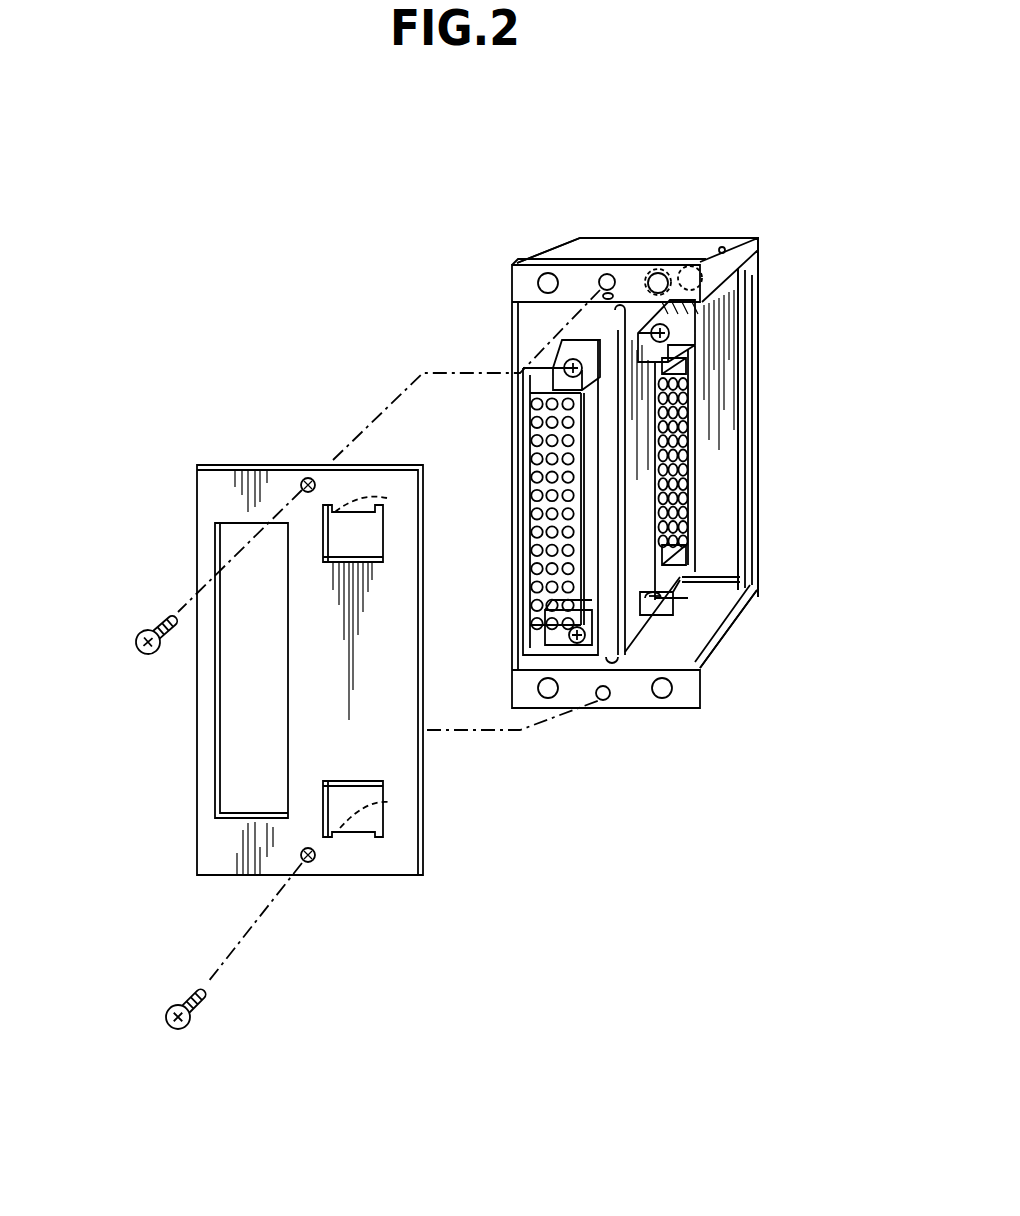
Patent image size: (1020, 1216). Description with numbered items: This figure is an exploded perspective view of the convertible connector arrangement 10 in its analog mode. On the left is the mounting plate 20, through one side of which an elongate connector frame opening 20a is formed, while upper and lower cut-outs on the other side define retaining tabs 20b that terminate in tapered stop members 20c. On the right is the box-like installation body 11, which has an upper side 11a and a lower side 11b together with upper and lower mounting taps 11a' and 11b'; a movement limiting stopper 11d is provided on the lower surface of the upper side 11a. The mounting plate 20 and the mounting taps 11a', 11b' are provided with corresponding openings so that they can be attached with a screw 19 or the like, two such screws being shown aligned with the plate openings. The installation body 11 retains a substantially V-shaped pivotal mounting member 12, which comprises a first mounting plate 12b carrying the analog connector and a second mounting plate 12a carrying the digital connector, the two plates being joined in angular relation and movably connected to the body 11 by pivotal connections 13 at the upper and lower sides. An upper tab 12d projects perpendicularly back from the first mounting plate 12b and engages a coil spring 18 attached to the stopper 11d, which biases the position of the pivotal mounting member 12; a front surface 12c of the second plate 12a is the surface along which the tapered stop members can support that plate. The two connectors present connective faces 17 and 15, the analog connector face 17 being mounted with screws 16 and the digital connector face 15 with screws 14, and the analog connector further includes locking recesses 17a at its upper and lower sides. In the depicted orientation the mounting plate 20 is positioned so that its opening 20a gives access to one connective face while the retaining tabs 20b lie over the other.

The convertible connector arrangement 10 is at (505, 862).
The installation body 11 is at (768, 410).
The upper side 11a is at (637, 187).
The upper mounting tap 11a' is at (609, 213).
The lower side 11b is at (766, 622).
The lower mounting tap 11b' is at (612, 752).
The movement limiting stopper 11d is at (725, 250).
The pivotal mounting member 12 is at (668, 627).
The second mounting plate 12a is at (605, 700).
The first mounting plate 12b is at (637, 642).
The front surface 12c is at (603, 293).
The upper tab 12d is at (650, 272).
The pivotal connection 13 is at (640, 268).
The screw 14 is at (566, 363).
The connective face 15 is at (523, 447).
The screw 16 is at (668, 333).
The connective face 17 is at (706, 474).
The locking recess 17a is at (688, 366).
The coil spring 18 is at (707, 268).
The screw 19 is at (162, 612).
The mounting plate 20 is at (214, 882).
The connector frame opening 20a is at (233, 732).
The retaining tab 20b is at (386, 497).
The tapered stop member 20c is at (368, 493).